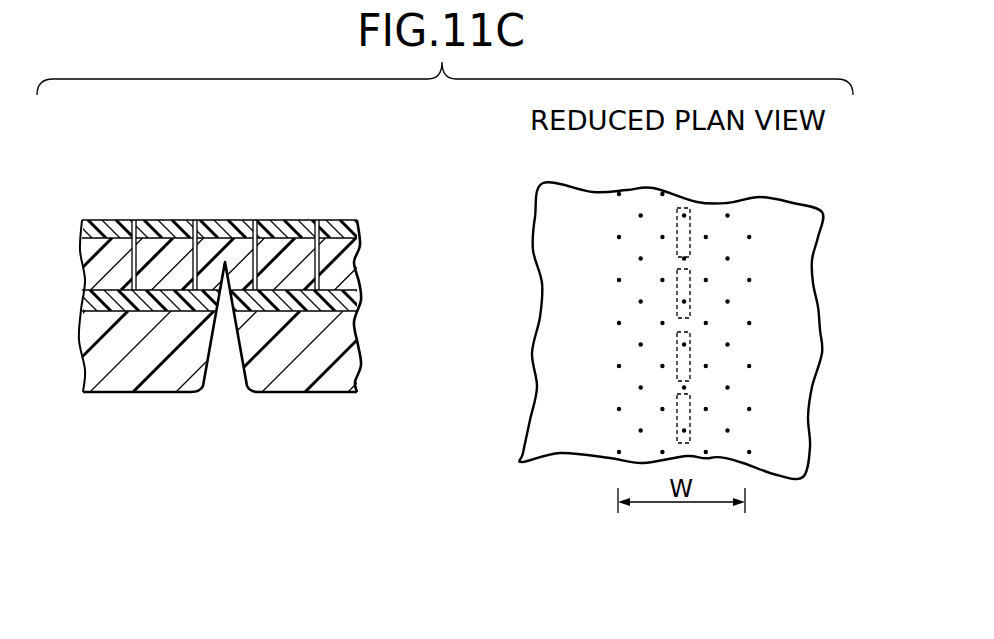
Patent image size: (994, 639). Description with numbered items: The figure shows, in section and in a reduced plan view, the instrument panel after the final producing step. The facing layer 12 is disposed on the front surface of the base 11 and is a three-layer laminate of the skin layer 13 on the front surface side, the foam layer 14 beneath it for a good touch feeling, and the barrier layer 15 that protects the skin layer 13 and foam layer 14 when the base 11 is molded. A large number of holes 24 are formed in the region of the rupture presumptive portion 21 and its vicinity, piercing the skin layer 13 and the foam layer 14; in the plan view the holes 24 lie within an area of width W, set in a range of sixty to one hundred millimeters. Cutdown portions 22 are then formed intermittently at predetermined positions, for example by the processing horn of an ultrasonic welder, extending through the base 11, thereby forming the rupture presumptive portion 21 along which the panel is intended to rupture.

The base 11 is at (360, 358).
The facing layer 12 is at (237, 265).
The skin layer 13 is at (360, 227).
The foam layer 14 is at (360, 266).
The barrier layer 15 is at (230, 304).
The rupture presumptive portion 21 is at (224, 200).
The cutdown portions 22 is at (226, 367).
The holes 24 is at (133, 220).